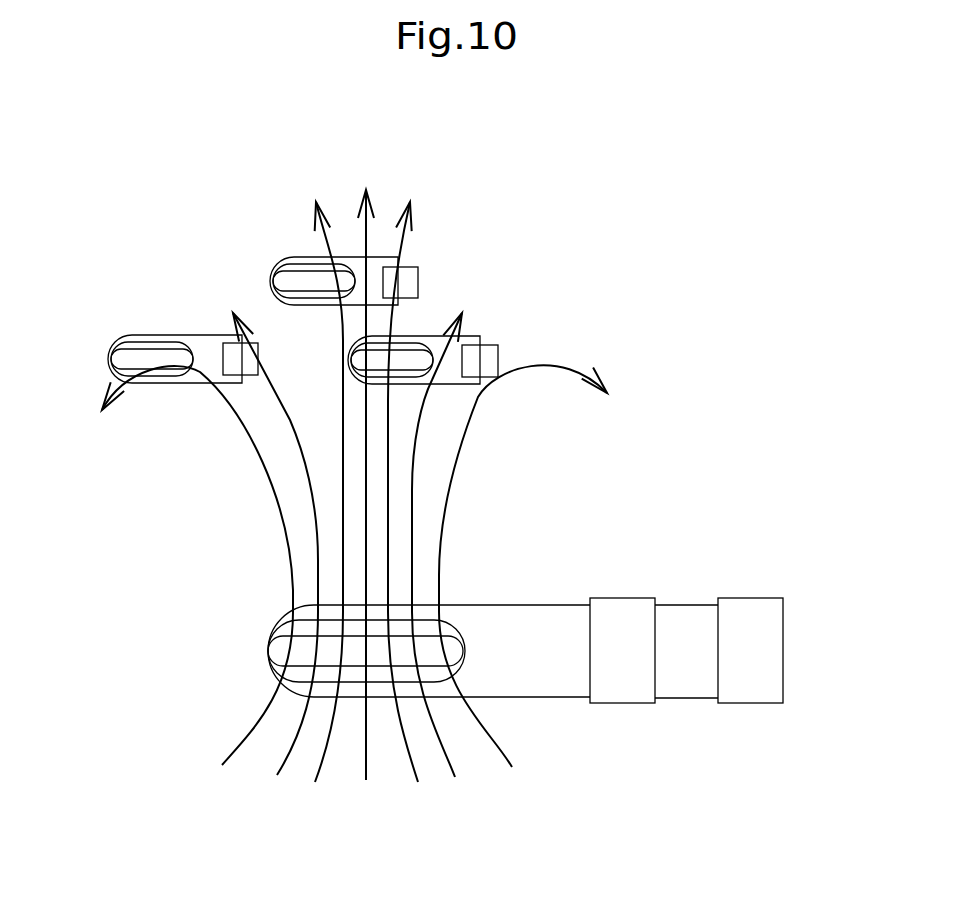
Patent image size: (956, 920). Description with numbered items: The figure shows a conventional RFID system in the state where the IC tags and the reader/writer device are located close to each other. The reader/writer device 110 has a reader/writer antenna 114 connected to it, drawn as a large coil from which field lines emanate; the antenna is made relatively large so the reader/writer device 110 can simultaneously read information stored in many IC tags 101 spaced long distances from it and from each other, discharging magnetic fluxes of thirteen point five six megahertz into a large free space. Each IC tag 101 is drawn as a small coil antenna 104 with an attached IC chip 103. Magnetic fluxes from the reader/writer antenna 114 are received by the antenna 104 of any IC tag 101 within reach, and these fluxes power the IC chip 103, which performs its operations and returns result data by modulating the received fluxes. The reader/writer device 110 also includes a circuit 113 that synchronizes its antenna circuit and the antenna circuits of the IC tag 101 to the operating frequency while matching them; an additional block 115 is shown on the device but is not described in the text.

The IC tag 101 is at (303, 225).
The IC chip 103 is at (233, 353).
The antenna 104 is at (292, 253).
The reader/writer device 110 is at (484, 588).
The circuit 113 is at (740, 630).
The reader/writer antenna 114 is at (262, 650).
The yoke 115 is at (616, 633).